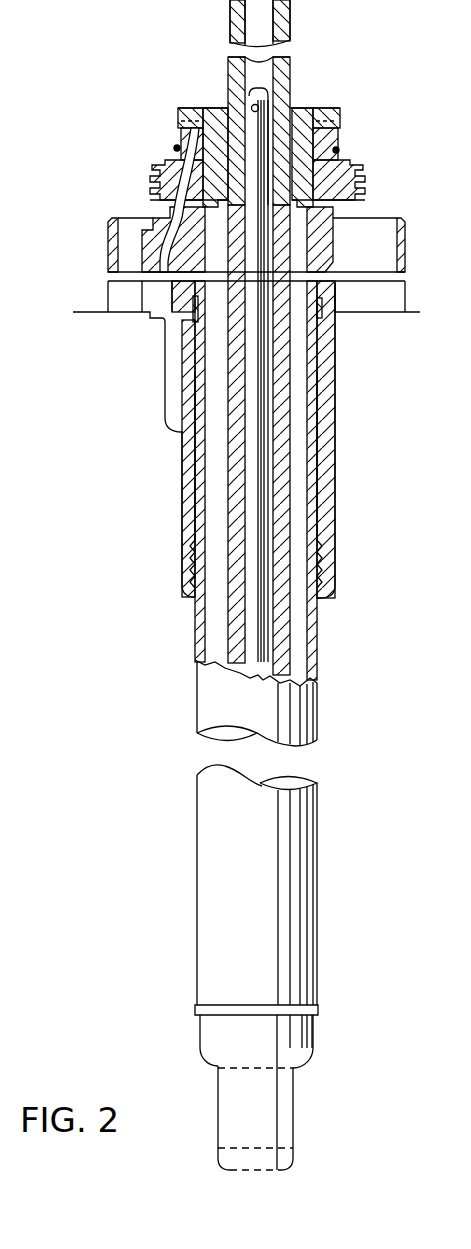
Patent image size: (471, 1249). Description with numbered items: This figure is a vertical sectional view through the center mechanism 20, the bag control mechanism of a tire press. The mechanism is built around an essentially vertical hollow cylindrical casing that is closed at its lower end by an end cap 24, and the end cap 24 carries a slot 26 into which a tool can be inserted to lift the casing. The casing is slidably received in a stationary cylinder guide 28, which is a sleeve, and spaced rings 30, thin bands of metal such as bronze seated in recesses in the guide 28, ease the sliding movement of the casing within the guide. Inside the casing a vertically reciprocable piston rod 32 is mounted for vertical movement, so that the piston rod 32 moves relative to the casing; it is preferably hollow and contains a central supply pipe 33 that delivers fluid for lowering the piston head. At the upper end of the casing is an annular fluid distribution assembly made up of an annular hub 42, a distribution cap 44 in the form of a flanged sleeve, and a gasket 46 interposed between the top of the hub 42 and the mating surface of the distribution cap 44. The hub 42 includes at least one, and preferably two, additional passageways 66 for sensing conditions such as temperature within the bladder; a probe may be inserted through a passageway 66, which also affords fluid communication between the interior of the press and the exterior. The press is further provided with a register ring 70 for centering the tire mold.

The center mechanism 20 is at (122, 820).
The end cap 24 is at (300, 1058).
The slot 26 is at (281, 1145).
The cylinder guide 28 is at (338, 578).
The spaced rings 30 is at (165, 325).
The piston rod 32 is at (290, 65).
The central supply pipe 33 is at (258, 105).
The annular hub 42 is at (350, 181).
The distribution cap 44 is at (341, 108).
The gasket 46 is at (340, 126).
The passageway 66 is at (163, 202).
The register ring 70 is at (108, 263).